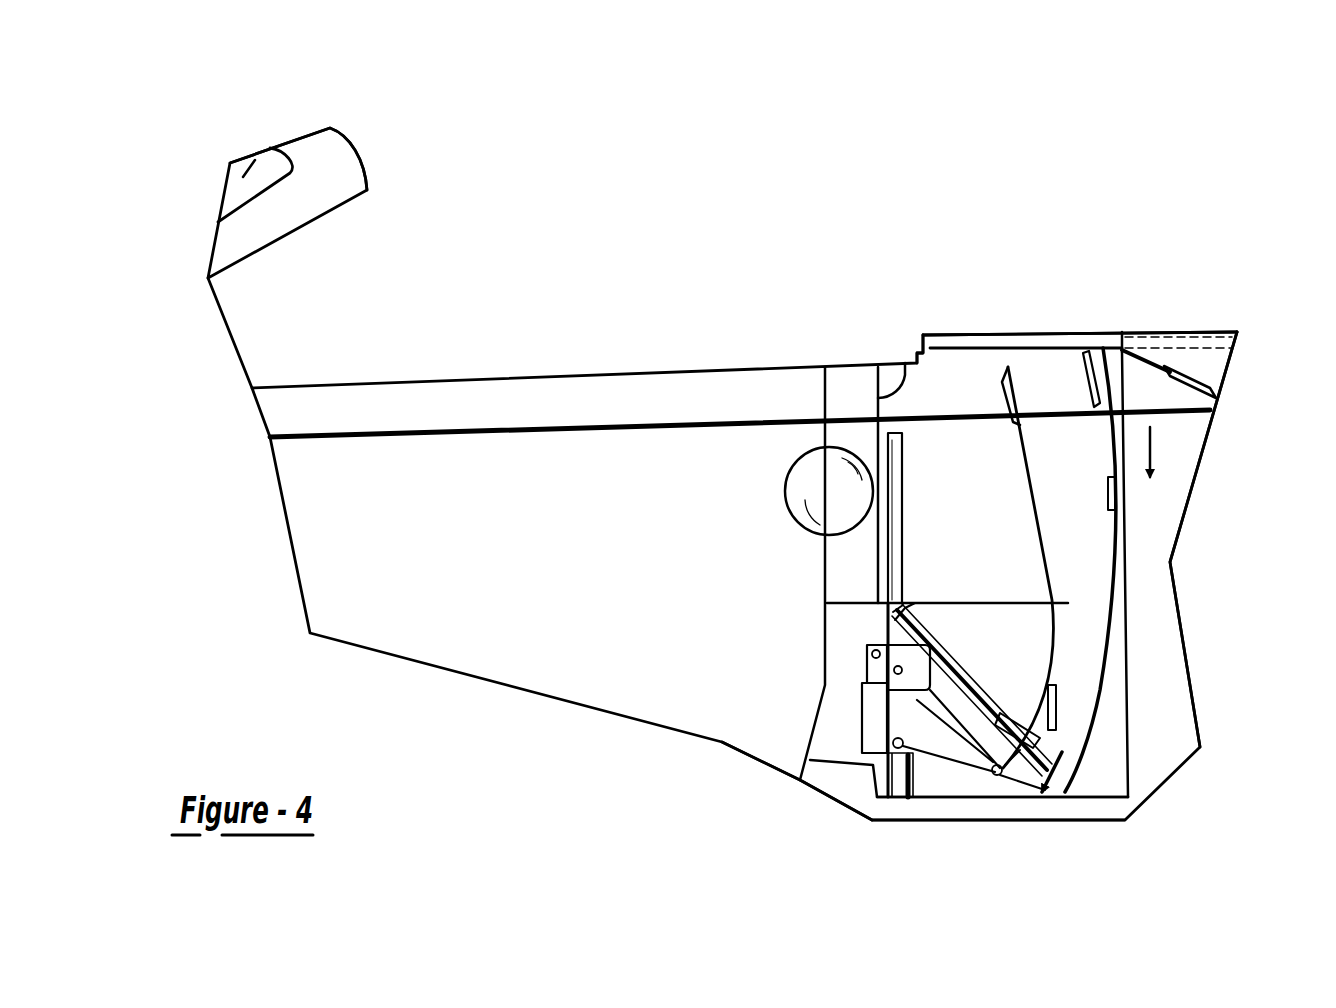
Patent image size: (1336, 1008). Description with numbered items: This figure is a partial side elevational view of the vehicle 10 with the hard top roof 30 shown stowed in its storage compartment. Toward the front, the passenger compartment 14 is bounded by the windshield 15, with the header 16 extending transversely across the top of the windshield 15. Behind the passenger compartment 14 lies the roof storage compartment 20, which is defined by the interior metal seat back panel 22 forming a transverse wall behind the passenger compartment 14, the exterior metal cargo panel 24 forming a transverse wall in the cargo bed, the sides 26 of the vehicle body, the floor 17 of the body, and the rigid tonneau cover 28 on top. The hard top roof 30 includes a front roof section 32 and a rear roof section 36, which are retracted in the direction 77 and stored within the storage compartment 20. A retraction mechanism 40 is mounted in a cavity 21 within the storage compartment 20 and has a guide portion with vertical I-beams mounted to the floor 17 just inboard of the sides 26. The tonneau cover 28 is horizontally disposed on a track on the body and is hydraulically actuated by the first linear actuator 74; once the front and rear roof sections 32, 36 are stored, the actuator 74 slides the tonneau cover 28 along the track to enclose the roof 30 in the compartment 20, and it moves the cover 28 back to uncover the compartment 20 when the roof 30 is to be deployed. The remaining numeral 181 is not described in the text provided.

The vehicle 10 is at (538, 303).
The passenger compartment 14 is at (567, 687).
The windshield 15 is at (243, 177).
The header 16 is at (302, 138).
The floor 17 is at (977, 797).
The roof storage compartment 20 is at (1128, 778).
The cavity 21 is at (1113, 755).
The seat back panel 22 is at (902, 363).
The exterior cargo panel 24 is at (1123, 380).
The sides 26 is at (1110, 367).
The tonneau cover 28 is at (963, 337).
The hard top roof 30 is at (1057, 283).
The front roof section 32 is at (1037, 495).
The rear roof section 36 is at (1107, 427).
The retraction mechanism 40 is at (833, 817).
The first linear actuator 74 is at (1183, 410).
The retraction direction 77 is at (1152, 453).
The door edge 181 is at (1098, 682).